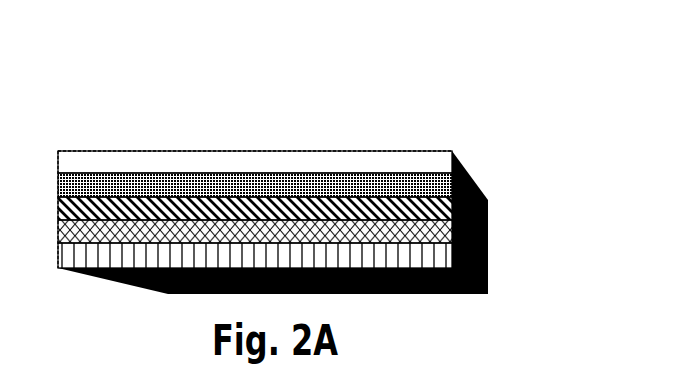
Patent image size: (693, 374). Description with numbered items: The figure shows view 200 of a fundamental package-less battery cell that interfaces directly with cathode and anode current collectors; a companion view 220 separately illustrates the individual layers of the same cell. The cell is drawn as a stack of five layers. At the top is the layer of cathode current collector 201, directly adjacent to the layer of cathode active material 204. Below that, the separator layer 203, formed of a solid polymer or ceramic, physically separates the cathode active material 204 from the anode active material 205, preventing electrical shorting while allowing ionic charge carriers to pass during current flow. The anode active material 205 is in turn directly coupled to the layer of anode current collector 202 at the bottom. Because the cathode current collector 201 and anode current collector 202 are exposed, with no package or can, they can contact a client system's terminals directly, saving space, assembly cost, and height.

The view of package-less battery cell 200 is at (468, 75).
The cathode current collector 201 is at (477, 183).
The anode current collector 202 is at (483, 295).
The separator layer 203 is at (485, 237).
The cathode active material 204 is at (485, 205).
The anode active material 205 is at (485, 257).
The view of individual battery cell layers 220 is at (651, 369).